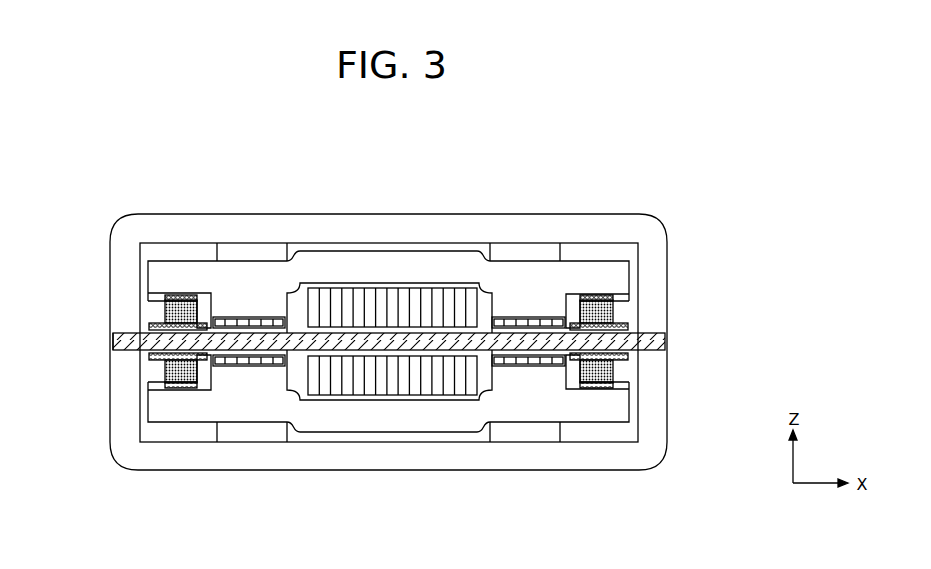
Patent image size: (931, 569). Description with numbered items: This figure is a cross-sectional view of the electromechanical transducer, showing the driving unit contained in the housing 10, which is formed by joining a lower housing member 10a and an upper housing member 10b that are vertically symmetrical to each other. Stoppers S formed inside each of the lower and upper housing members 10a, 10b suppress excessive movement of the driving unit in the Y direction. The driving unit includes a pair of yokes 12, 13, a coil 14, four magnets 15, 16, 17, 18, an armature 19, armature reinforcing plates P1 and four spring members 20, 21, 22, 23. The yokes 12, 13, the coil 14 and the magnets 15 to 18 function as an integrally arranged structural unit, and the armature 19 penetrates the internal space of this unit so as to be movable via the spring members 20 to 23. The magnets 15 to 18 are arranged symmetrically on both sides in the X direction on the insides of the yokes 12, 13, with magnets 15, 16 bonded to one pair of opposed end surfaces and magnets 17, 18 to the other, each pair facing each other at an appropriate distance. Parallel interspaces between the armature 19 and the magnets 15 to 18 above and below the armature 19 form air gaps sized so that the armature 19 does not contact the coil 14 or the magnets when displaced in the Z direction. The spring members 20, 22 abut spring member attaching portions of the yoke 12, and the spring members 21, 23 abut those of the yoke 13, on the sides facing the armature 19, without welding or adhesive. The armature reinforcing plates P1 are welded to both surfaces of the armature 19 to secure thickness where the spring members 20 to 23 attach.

The housing 10 is at (388, 345).
The lower housing member 10a is at (462, 455).
The upper housing member 10b is at (455, 228).
The yoke 12 is at (343, 432).
The yoke 13 is at (360, 267).
The coil 14 is at (407, 384).
The magnet 15 is at (523, 366).
The magnet 16 is at (523, 317).
The magnet 17 is at (254, 366).
The magnet 18 is at (256, 317).
The armature 19 is at (663, 341).
The spring member 20 is at (613, 368).
The spring member 21 is at (613, 308).
The spring member 22 is at (165, 372).
The spring member 23 is at (165, 310).
The armature reinforcing plate P1 is at (113, 350).
The stopper S is at (232, 247).